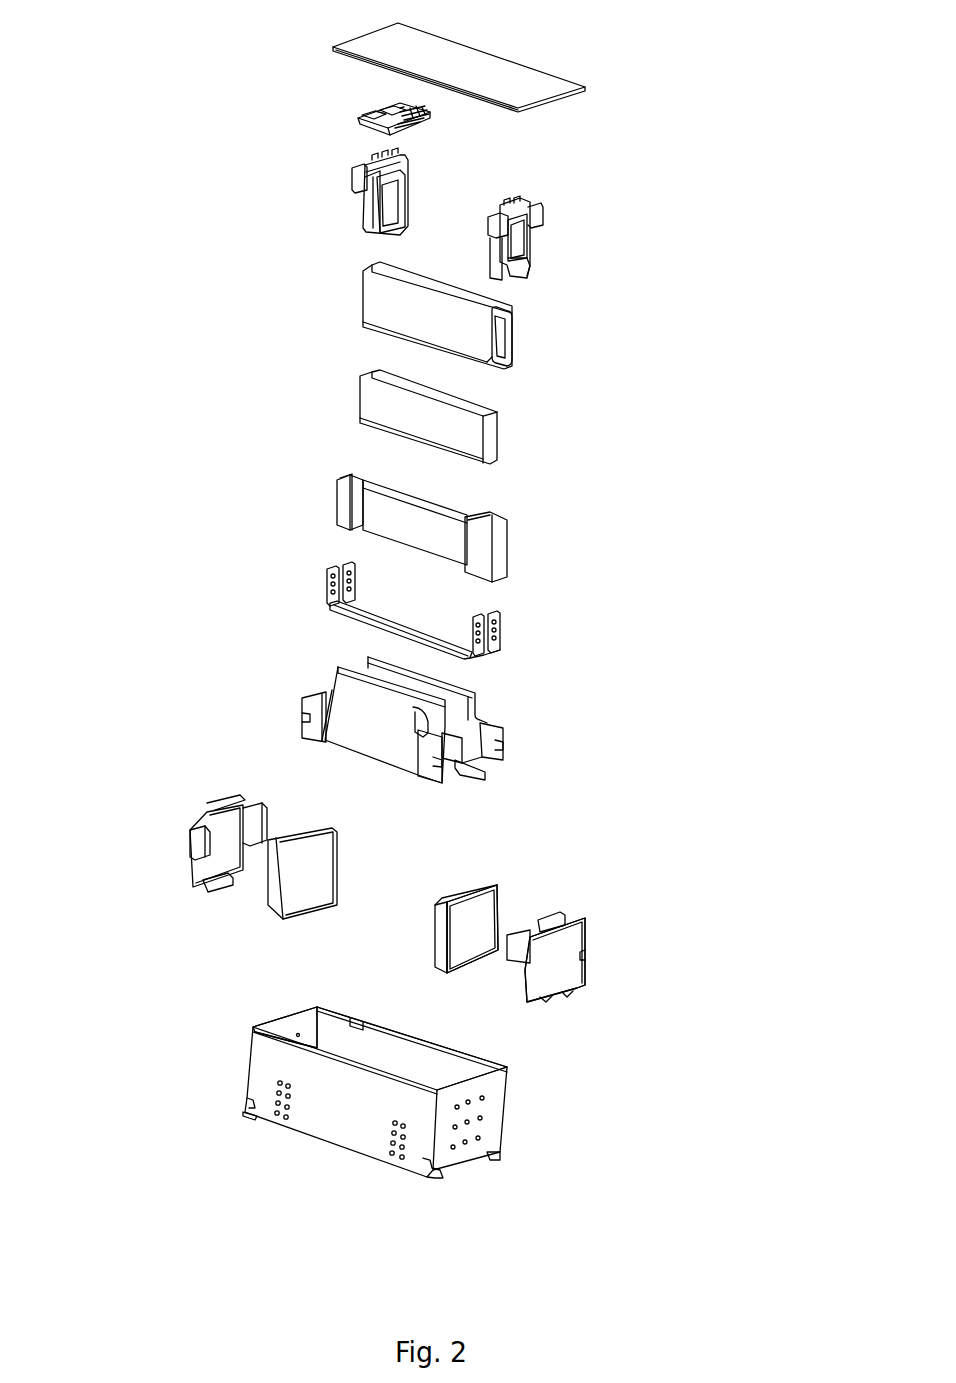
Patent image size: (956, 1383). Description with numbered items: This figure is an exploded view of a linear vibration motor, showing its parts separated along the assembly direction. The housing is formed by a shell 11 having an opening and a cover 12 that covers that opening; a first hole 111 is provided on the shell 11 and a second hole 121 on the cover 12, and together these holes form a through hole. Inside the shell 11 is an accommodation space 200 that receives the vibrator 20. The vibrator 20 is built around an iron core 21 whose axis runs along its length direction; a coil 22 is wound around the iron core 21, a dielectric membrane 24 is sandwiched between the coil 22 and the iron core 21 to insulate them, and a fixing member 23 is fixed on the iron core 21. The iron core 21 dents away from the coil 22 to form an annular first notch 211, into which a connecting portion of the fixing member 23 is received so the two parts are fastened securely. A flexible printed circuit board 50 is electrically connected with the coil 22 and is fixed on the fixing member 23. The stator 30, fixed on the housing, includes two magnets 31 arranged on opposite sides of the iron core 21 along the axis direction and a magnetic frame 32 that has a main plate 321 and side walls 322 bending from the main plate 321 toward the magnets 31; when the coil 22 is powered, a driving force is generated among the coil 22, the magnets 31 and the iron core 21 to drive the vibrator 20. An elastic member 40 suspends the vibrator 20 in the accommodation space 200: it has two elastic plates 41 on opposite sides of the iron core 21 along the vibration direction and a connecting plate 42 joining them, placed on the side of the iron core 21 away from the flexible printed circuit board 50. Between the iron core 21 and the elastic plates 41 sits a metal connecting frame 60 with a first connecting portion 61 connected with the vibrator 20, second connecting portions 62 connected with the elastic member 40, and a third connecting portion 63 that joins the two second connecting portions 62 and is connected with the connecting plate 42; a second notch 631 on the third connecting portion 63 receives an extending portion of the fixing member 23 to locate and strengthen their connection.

The shell 11 is at (367, 1084).
The first hole 111 is at (287, 1037).
The cover 12 is at (374, 50).
The second hole 121 is at (372, 60).
The vibrator 20 is at (270, 185).
The iron core 21 is at (434, 528).
The first notch 211 is at (480, 525).
The coil 22 is at (372, 313).
The fixing member 23 is at (362, 208).
The dielectric membrane 24 is at (380, 397).
The stator 30 is at (640, 855).
The magnet 31 is at (310, 870).
The magnetic frame 32 is at (108, 793).
The main plate 321 is at (223, 865).
The side wall 322 is at (200, 833).
The elastic member 40 is at (577, 683).
The elastic plate 41 is at (477, 702).
The connecting plate 42 is at (493, 742).
The flexible printed circuit board 50 is at (363, 118).
The connecting frame 60 is at (577, 563).
The first connecting portion 61 is at (493, 625).
The second connecting portion 62 is at (498, 650).
The third connecting portion 63 is at (450, 606).
The second notch 631 is at (355, 598).
The accommodation space 200 is at (440, 1063).